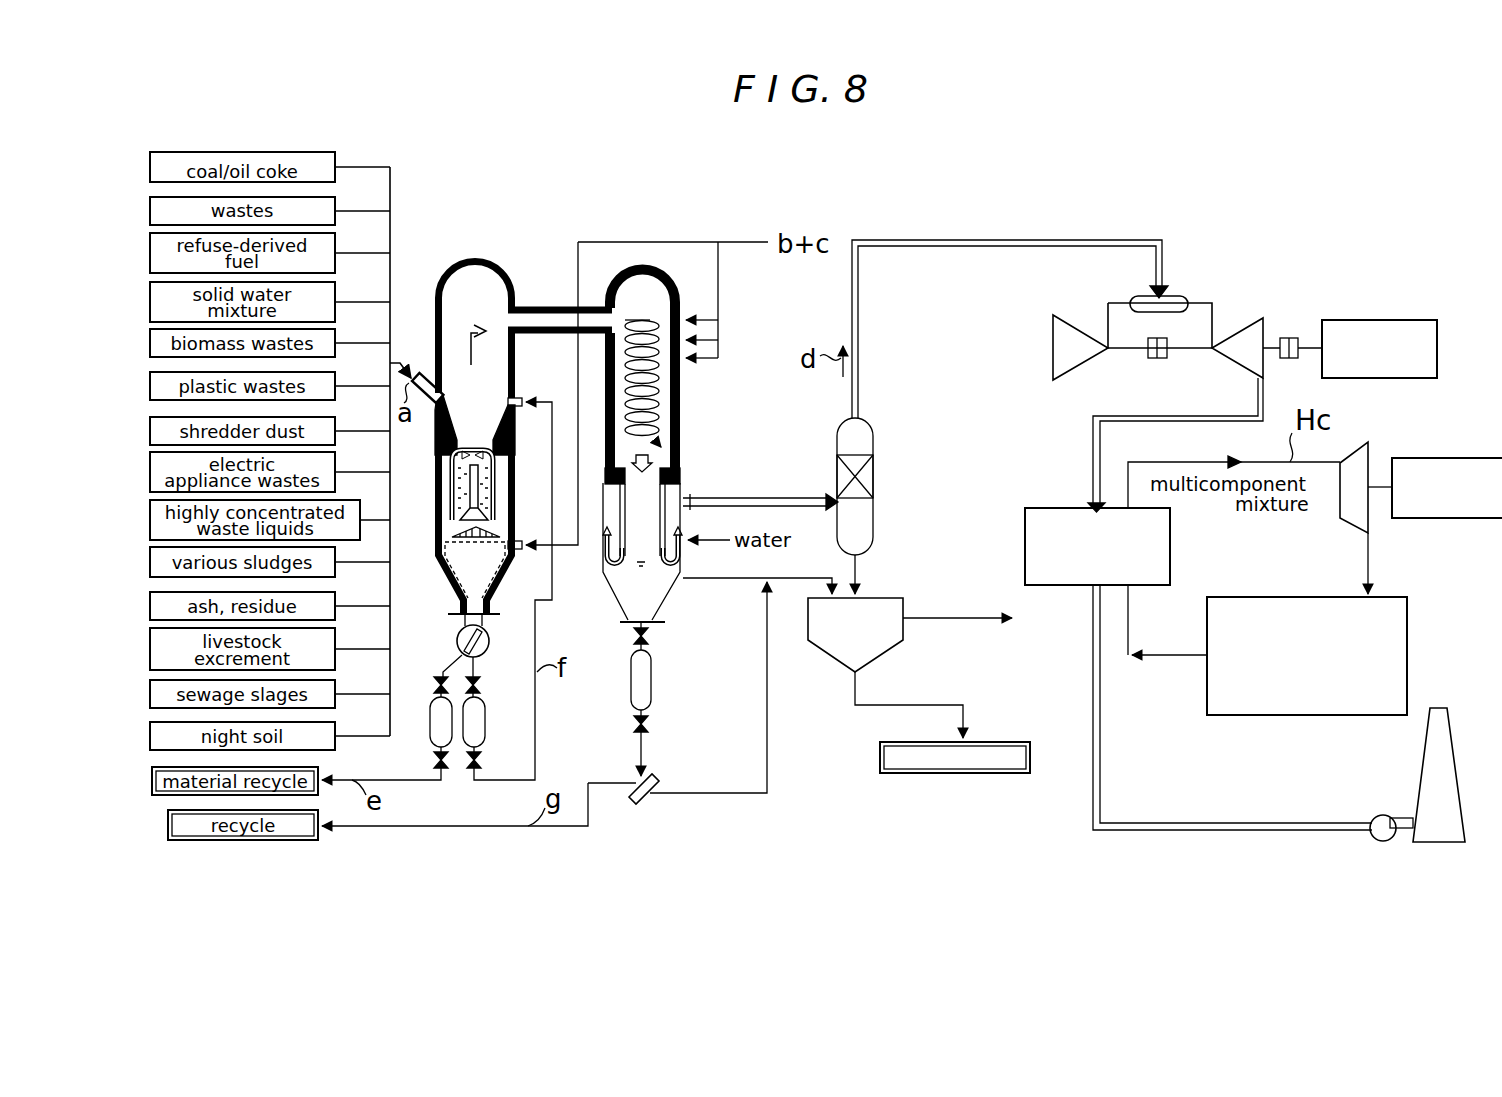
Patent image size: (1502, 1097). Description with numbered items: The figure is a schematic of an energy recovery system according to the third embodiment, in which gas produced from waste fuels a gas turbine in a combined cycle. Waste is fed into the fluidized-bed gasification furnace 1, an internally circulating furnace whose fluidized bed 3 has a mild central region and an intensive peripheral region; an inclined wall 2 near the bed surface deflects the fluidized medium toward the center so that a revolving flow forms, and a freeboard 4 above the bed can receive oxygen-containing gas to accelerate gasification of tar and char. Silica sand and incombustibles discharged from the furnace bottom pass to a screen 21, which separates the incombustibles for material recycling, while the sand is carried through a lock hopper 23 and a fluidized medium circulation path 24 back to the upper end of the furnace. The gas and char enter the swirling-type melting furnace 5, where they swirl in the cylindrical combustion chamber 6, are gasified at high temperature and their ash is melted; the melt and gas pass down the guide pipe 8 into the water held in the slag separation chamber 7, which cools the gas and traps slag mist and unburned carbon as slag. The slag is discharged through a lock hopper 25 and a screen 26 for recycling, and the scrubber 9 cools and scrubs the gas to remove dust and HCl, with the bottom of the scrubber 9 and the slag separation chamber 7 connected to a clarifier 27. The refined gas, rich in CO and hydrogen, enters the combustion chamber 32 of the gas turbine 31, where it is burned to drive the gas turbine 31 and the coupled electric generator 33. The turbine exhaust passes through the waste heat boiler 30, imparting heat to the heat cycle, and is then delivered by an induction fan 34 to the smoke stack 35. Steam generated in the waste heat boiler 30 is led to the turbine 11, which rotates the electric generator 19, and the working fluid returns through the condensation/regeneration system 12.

The fluidized-bed gasification furnace 1 is at (492, 276).
The inclined wall 2 is at (446, 464).
The fluidized bed 3 is at (460, 500).
The freeboard 4 is at (452, 298).
The swirling-type melting furnace 5 is at (683, 420).
The combustion chamber 6 is at (683, 387).
The slag separation chamber 7 is at (640, 585).
The guide pipe 8 is at (687, 488).
The scrubber 9 is at (873, 470).
The turbine 11 is at (1345, 462).
The condensation/regeneration system 12 is at (1290, 597).
The electric generator 19 is at (1445, 458).
The screen 21 is at (458, 636).
The lock hopper 23 is at (484, 733).
The fluidized medium circulation path 24 is at (430, 730).
The lock hopper 25 is at (655, 680).
The screen 26 is at (650, 796).
The clarifier 27 is at (887, 598).
The waste heat boiler 30 is at (1043, 507).
The gas turbine 31 is at (1243, 325).
The combustion chamber 32 is at (1180, 296).
The electric generator 33 is at (1370, 320).
The induction fan 34 is at (1378, 816).
The smoke stack 35 is at (1457, 740).